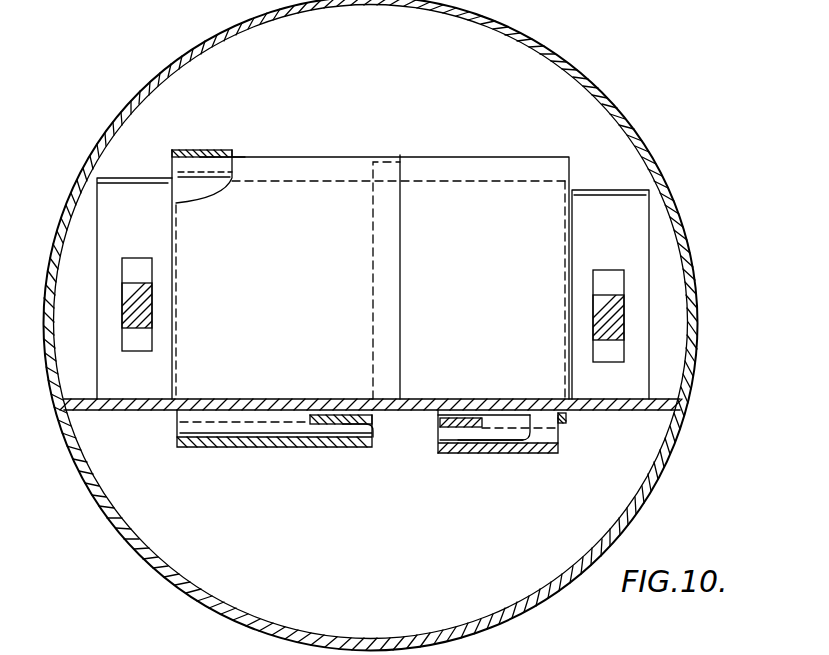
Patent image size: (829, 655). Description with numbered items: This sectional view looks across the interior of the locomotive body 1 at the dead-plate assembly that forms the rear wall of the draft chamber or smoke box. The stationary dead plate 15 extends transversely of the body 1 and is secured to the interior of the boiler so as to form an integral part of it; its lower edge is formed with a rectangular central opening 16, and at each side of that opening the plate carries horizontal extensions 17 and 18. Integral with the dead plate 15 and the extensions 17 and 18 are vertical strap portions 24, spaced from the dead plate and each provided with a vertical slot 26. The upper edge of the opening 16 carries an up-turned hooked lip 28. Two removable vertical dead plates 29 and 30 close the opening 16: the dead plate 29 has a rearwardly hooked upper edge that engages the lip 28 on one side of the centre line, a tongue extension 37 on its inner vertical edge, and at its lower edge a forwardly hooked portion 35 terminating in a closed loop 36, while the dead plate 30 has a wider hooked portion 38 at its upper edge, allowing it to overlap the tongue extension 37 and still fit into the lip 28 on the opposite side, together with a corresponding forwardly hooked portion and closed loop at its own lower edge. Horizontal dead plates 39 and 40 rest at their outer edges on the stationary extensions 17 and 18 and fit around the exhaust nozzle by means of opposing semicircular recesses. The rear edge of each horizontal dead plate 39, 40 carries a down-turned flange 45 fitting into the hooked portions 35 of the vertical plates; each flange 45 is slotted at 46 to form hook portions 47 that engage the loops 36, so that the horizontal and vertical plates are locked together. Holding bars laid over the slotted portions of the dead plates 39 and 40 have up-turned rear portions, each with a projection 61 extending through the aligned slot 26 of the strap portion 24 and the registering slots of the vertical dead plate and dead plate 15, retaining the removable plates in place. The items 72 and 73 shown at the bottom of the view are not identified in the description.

The body of the locomotive 1 is at (695, 265).
The stationary dead plate 15 is at (213, 80).
The rectangular central opening 16 is at (195, 188).
The horizontal extension 17 is at (618, 412).
The horizontal extension 18 is at (117, 411).
The vertical strap portion 24 is at (128, 193).
The vertical slot 26 is at (153, 273).
The up-turned hooked lip 28 is at (218, 160).
The removable vertical dead plate 29 is at (498, 296).
The removable vertical dead plate 30 is at (318, 296).
The forwardly hooked portion 35 is at (559, 456).
The closed loop 36 is at (438, 418).
The tongue extension 37 is at (383, 243).
The hooked portion 38 is at (186, 150).
The horizontal dead plate 39 is at (460, 401).
The horizontal dead plate 40 is at (252, 399).
The down-turned flange 45 is at (286, 413).
The slot 46 is at (347, 438).
The hook portion 47 is at (365, 437).
The projection 61 is at (147, 315).
The lower element 72 is at (197, 645).
The lower element 73 is at (488, 649).